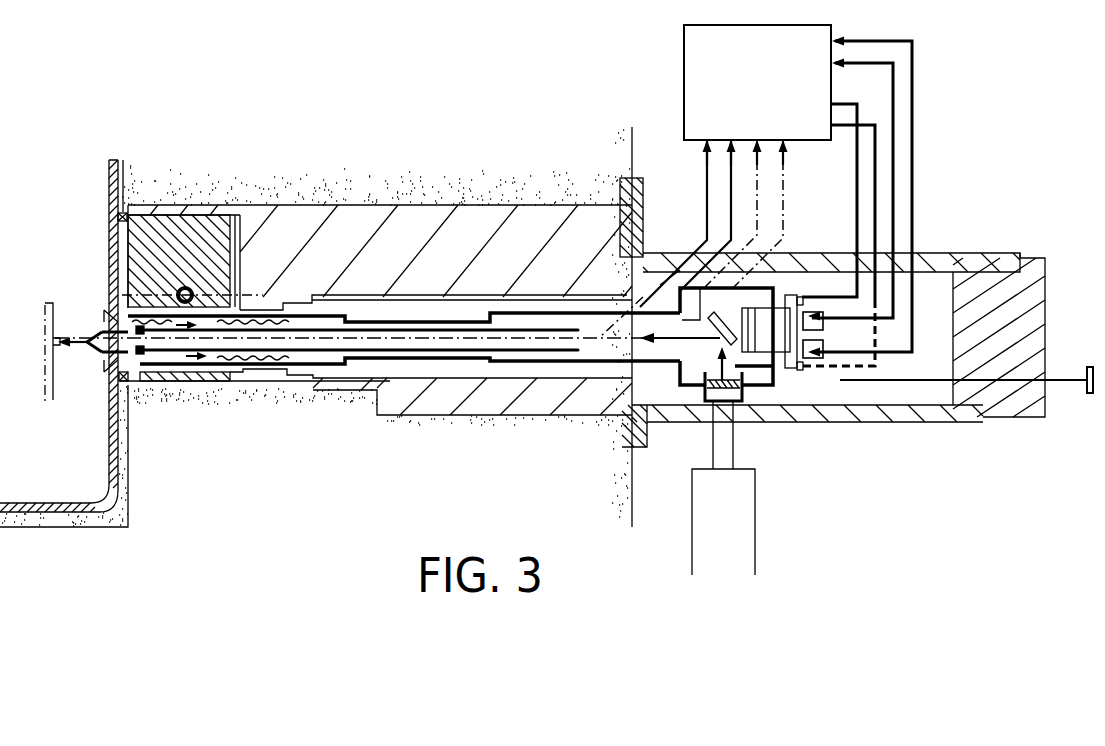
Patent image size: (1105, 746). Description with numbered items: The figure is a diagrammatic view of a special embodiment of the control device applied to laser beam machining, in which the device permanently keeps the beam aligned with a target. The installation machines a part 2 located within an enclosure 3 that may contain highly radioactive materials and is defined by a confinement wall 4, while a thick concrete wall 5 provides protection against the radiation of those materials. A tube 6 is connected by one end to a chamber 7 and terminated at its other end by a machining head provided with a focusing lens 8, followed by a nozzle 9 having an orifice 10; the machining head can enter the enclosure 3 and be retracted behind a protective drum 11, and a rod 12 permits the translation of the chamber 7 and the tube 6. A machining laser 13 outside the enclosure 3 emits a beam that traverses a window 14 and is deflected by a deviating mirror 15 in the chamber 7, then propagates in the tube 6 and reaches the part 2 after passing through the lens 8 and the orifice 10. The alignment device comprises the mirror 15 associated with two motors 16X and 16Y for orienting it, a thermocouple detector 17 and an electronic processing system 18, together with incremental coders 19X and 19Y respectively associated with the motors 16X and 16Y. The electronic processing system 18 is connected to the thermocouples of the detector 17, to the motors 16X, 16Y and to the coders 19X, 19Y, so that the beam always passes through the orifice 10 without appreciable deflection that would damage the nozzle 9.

The part 2 is at (44, 393).
The enclosure 3 is at (50, 505).
The confinement wall 4 is at (100, 513).
The thick concrete wall 5 is at (370, 494).
The tube 6 is at (520, 312).
The chamber 7 is at (752, 290).
The focusing lens 8 is at (104, 358).
The nozzle 9 is at (104, 329).
The orifice 10 is at (86, 338).
The protective drum 11 is at (170, 232).
The rod 12 is at (1080, 392).
The machining laser 13 is at (733, 532).
The window 14 is at (727, 403).
The deviating mirror 15 is at (720, 336).
The motor 16X is at (803, 367).
The motor 16Y is at (803, 299).
The detector 17 is at (124, 381).
The electronic processing system 18 is at (692, 74).
The incremental coder 19X is at (826, 354).
The incremental coder 19Y is at (824, 318).